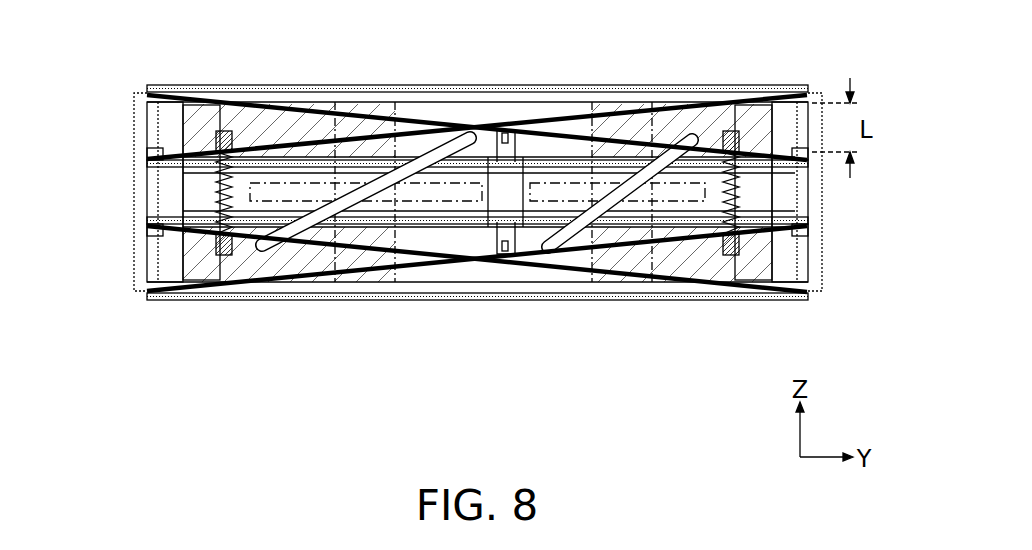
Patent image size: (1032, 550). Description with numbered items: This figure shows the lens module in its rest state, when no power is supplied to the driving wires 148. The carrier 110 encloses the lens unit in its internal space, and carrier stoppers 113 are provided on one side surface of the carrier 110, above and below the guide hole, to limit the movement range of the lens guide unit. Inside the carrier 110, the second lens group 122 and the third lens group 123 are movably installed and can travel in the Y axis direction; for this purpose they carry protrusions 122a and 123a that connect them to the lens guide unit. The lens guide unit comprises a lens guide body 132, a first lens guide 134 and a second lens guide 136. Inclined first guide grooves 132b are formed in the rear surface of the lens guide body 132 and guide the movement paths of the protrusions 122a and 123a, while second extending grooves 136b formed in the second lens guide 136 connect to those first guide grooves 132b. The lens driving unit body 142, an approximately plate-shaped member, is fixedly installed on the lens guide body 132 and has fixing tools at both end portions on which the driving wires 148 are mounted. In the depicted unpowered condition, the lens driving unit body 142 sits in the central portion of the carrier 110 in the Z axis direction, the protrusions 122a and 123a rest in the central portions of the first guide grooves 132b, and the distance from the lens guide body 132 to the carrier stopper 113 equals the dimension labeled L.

The carrier 110 is at (143, 195).
The carrier stoppers 113 is at (698, 104).
The second lens group 122 is at (580, 118).
The protrusion 122a is at (662, 135).
The third lens group 123 is at (405, 112).
The protrusion 123a is at (314, 140).
The lens guide body 132 is at (790, 188).
The first guide grooves 132b is at (352, 250).
The first lens guide 134 is at (183, 130).
The second lens guide 136 is at (182, 256).
The second extending grooves 136b is at (276, 255).
The lens driving unit body 142 is at (274, 176).
The driving wires 148 is at (520, 126).